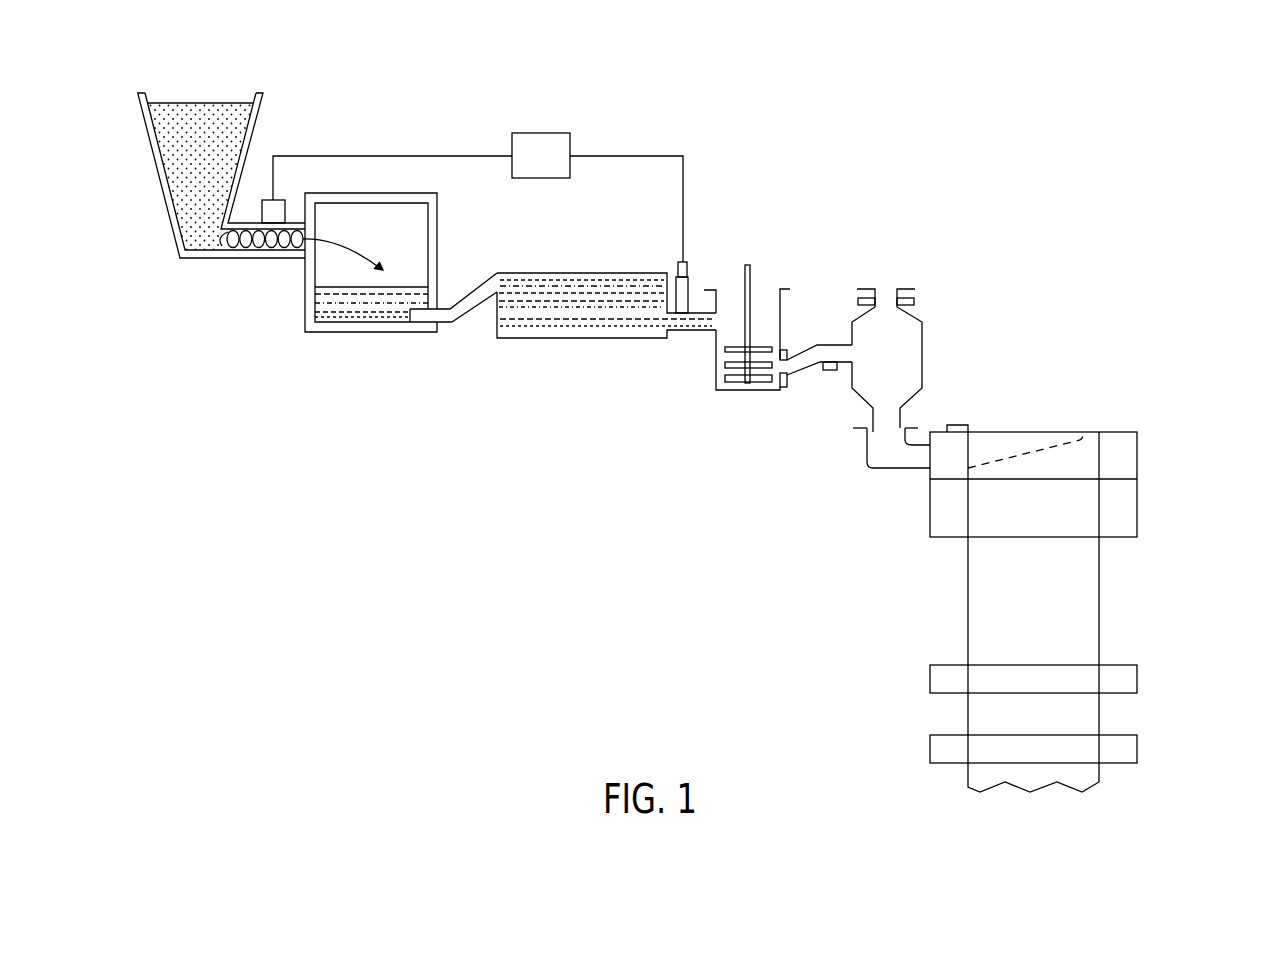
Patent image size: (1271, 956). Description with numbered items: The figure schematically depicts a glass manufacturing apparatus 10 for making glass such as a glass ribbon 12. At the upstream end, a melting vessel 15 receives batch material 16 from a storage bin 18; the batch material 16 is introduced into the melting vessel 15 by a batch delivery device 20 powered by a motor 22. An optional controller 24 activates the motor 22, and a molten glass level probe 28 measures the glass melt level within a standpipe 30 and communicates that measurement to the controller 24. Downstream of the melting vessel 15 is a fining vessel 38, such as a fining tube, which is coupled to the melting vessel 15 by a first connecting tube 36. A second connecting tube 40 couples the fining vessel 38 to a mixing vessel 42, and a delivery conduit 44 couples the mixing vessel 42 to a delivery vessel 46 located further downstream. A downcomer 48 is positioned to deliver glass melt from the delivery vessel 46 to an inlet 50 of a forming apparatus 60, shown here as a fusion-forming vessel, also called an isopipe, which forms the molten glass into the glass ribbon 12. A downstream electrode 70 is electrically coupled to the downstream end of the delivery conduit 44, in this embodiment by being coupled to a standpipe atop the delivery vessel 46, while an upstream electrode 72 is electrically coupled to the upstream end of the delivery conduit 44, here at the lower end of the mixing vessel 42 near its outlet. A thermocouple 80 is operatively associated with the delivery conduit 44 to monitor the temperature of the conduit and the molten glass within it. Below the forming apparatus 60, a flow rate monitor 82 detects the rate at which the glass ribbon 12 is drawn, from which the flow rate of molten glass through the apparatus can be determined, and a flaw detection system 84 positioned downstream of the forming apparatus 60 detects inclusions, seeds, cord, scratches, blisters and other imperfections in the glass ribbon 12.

The glass manufacturing apparatus 10 is at (930, 167).
The glass ribbon 12 is at (967, 627).
The melting vessel 15 is at (333, 333).
The batch material 16 is at (192, 102).
The storage bin 18 is at (158, 175).
The batch delivery device 20 is at (252, 252).
The motor 22 is at (279, 198).
The controller 24 is at (540, 133).
The molten glass level probe 28 is at (678, 265).
The standpipe 30 is at (696, 283).
The first connecting tube 36 is at (474, 291).
The fining vessel 38 is at (577, 272).
The second connecting tube 40 is at (697, 332).
The mixing vessel 42 is at (788, 316).
The delivery conduit 44 is at (782, 392).
The delivery vessel 46 is at (923, 332).
The downcomer 48 is at (872, 418).
The inlet 50 is at (865, 448).
The forming apparatus 60 is at (1130, 422).
The downstream electrode 70 is at (917, 302).
The upstream electrode 72 is at (797, 350).
The thermocouple 80 is at (828, 371).
The flow rate monitor 82 is at (1138, 678).
The flaw detection system 84 is at (1138, 750).